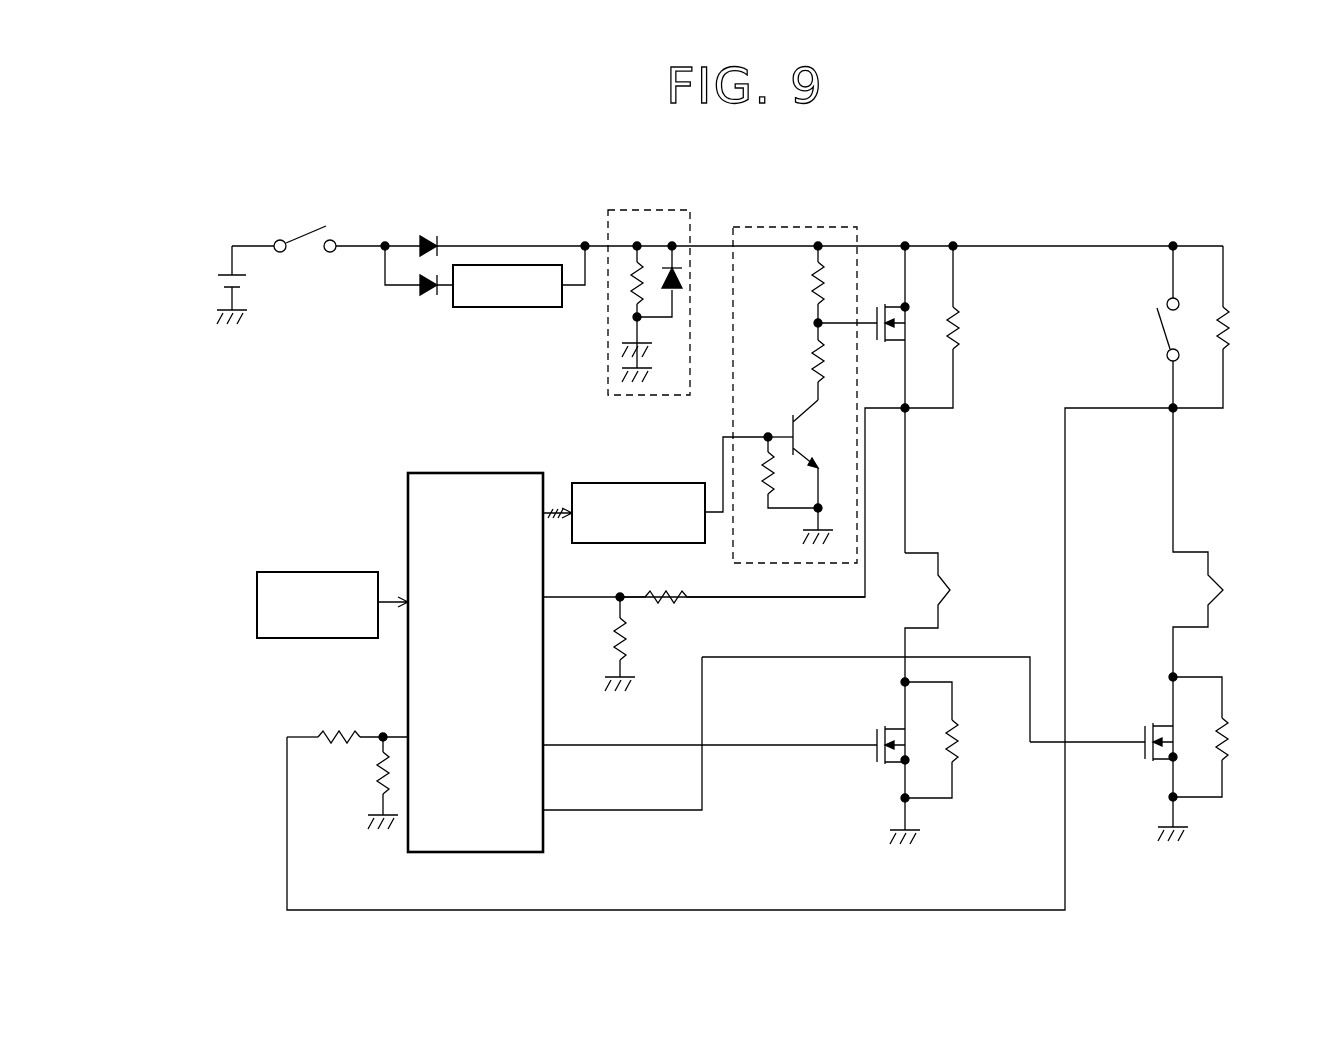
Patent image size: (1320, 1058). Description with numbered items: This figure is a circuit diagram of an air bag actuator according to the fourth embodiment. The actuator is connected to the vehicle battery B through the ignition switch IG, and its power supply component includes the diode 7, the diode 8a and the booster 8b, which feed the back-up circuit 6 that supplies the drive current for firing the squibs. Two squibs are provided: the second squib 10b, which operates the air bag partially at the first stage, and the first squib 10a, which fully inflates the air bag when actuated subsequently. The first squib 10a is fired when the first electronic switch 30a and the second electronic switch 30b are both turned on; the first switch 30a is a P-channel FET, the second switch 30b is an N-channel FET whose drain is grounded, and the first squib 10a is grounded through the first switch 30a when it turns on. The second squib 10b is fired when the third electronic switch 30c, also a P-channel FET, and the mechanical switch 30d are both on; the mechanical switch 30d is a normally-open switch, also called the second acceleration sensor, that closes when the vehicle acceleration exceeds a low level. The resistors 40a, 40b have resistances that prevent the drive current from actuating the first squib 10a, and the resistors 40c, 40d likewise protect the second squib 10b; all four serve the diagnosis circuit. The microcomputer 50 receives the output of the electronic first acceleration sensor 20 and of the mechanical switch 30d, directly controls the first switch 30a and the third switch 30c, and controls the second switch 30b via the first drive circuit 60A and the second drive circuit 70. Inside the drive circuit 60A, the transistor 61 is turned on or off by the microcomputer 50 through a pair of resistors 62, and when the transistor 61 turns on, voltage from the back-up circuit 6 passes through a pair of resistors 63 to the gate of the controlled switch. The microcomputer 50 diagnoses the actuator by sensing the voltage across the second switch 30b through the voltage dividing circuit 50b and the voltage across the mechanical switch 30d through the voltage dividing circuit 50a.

The vehicle battery B is at (222, 272).
The ignition switch IG is at (311, 228).
The diode 7 is at (430, 236).
The diode 8a is at (431, 300).
The booster 8b is at (510, 307).
The back-up circuit 6 is at (642, 197).
The first drive circuit 60A is at (791, 395).
The resistors 63 is at (811, 280).
The transistor 61 is at (815, 437).
The resistors 62 is at (769, 474).
The second electronic switch 30b is at (869, 313).
The resistor 40b is at (960, 330).
The fourth mechanical switch 30d is at (1158, 330).
The resistor 40d is at (1230, 330).
The first squib 10a is at (952, 590).
The second squib 10b is at (1225, 590).
The first electronic switch 30a is at (870, 740).
The resistor 40a is at (962, 742).
The third electronic switch 30c is at (1140, 736).
The resistor 40c is at (1230, 740).
The microcomputer 50 is at (470, 473).
The voltage dividing circuit 50a is at (354, 782).
The voltage dividing circuit 50b is at (645, 628).
The first acceleration sensor 20 is at (318, 572).
The second drive circuit 70 is at (601, 483).